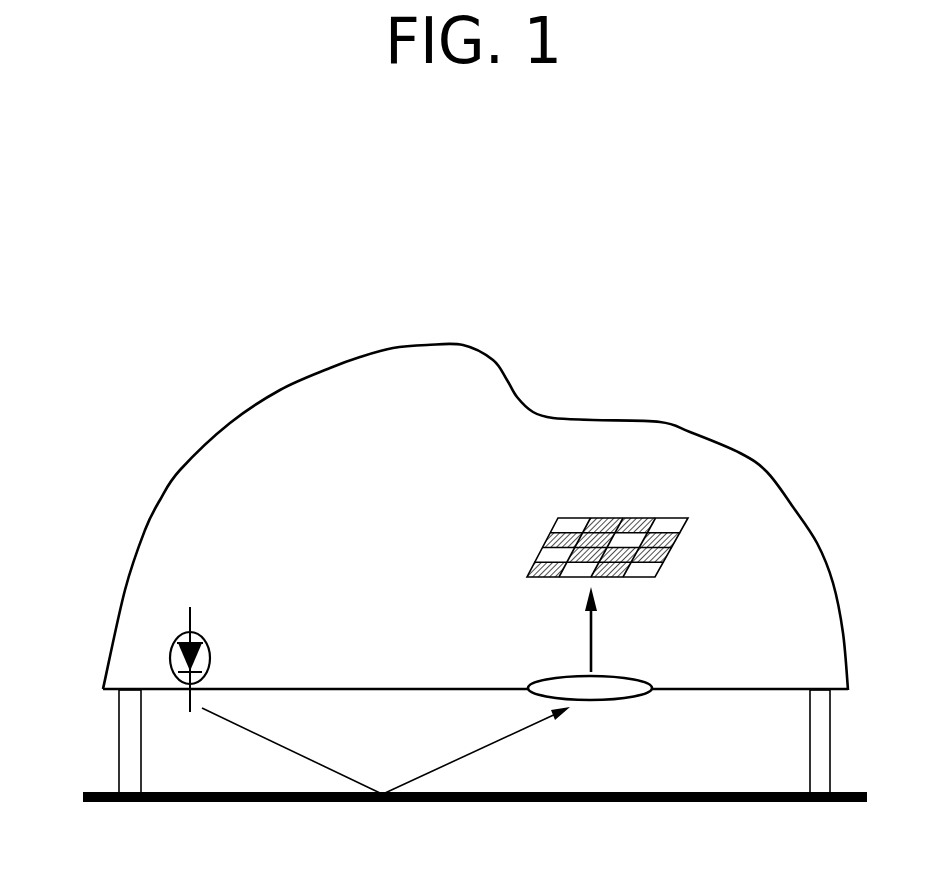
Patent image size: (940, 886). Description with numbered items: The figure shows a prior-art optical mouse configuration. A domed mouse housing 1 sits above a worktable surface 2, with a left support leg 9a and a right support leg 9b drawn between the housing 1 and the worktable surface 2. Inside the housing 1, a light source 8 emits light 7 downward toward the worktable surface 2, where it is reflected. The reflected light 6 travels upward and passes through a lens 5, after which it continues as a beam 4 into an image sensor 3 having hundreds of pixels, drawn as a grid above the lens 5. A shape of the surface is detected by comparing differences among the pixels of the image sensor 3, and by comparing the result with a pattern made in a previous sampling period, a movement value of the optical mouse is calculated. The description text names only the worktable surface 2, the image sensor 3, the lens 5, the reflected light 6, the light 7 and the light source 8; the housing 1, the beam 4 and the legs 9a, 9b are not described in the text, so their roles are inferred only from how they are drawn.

The housing / cover 1 is at (767, 472).
The worktable surface 2 is at (628, 804).
The image sensor 3 is at (637, 517).
The reflected light to sensor 4 is at (588, 622).
The lens 5 is at (642, 678).
The reflected light 6 is at (460, 755).
The light 7 is at (296, 750).
The light source 8 is at (213, 660).
The left support leg 9a is at (141, 740).
The right support leg 9b is at (830, 740).